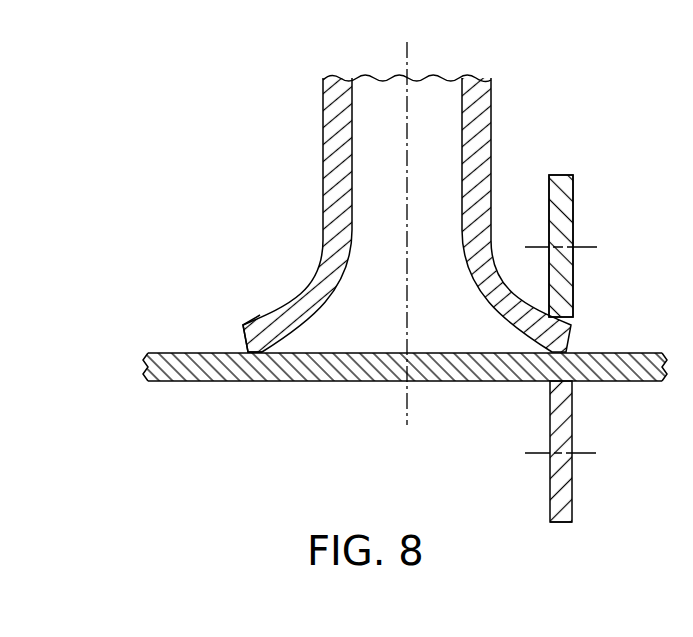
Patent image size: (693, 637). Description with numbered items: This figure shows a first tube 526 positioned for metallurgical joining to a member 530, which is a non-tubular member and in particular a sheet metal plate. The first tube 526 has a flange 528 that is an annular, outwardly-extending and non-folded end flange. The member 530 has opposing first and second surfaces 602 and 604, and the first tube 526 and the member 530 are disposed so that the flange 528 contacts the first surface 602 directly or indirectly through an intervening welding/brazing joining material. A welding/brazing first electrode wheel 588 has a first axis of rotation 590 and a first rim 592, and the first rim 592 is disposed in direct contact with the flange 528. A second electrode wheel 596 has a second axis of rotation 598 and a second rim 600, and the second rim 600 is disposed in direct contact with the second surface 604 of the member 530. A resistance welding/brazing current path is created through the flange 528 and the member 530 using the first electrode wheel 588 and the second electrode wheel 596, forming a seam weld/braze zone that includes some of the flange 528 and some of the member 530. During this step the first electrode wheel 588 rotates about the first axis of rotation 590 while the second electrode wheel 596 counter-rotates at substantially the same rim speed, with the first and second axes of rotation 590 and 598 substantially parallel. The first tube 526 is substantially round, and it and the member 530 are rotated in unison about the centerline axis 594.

The first tube 526 is at (414, 214).
The flange 528 is at (251, 323).
The member 530 is at (405, 420).
The first electrode wheel 588 is at (615, 229).
The first axis of rotation 590 is at (597, 247).
The first rim 592 is at (560, 174).
The centerline axis 594 is at (407, 47).
The second electrode wheel 596 is at (613, 451).
The second axis of rotation 598 is at (616, 434).
The second rim 600 is at (565, 523).
The first surface 602 is at (181, 352).
The second surface 604 is at (181, 383).